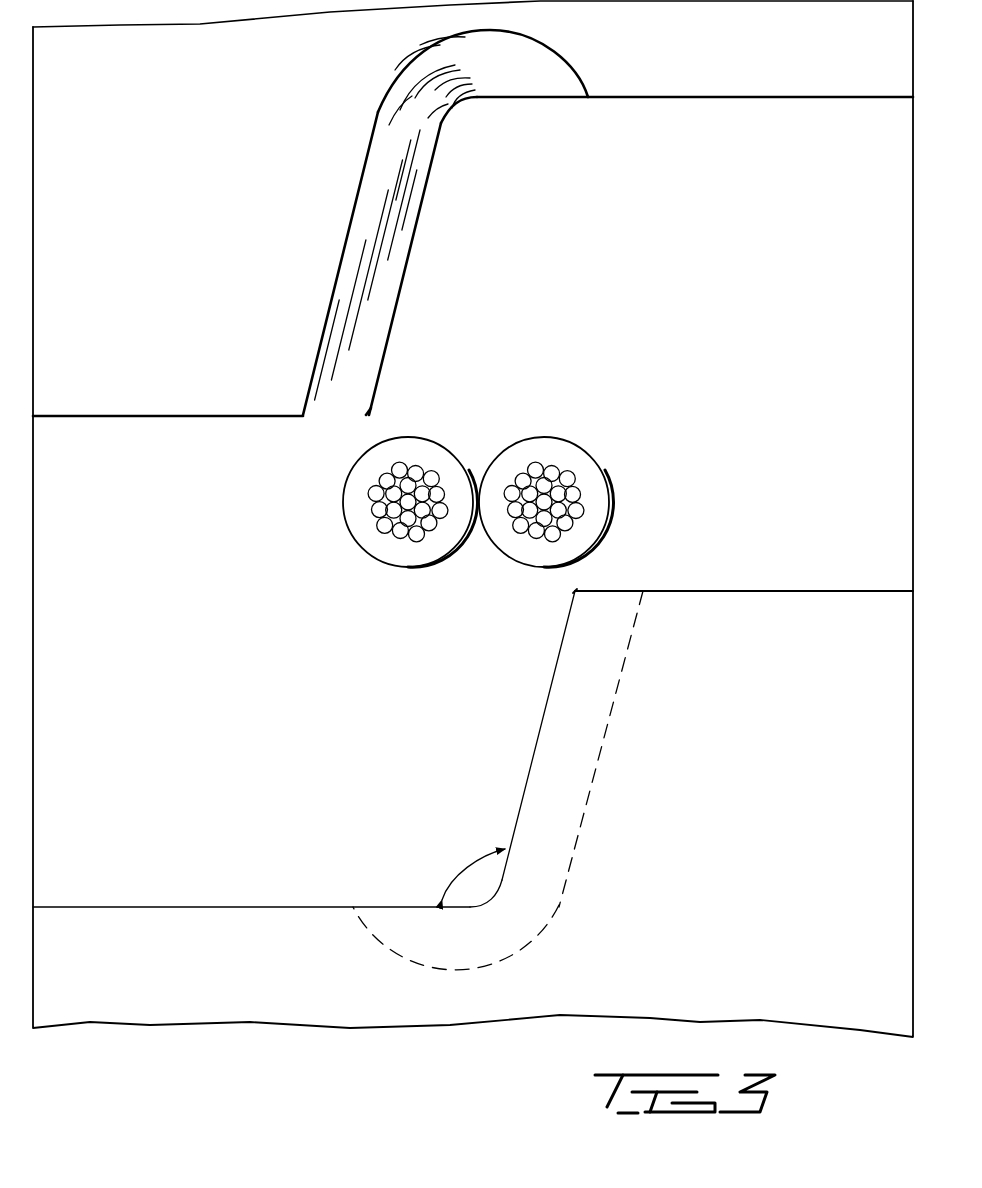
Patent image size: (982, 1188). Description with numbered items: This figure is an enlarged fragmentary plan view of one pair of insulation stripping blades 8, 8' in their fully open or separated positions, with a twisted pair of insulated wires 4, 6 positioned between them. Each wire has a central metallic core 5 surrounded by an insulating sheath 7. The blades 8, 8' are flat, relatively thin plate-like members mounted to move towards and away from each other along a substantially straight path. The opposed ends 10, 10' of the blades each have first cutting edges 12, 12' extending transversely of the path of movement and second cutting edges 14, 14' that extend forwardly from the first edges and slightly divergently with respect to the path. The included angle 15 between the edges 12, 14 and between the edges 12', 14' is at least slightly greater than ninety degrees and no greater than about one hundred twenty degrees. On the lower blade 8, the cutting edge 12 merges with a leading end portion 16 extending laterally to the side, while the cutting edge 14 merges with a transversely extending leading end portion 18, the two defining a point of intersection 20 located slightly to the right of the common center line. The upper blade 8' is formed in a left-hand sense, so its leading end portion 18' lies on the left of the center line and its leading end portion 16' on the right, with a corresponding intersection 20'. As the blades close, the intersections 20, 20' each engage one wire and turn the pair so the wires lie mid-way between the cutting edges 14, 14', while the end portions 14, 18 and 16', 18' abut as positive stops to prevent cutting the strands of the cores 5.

The wire 4 is at (599, 468).
The central metallic core 5 is at (560, 508).
The wire 6 is at (427, 462).
The insulating sheath 7 is at (562, 449).
The insulation stripping blade 8 is at (473, 567).
The insulation stripping blade 8' is at (473, 208).
The opposed end 10 is at (414, 909).
The opposed end 10' is at (390, 261).
The first cutting edge 12 is at (440, 891).
The first cutting edge 12' is at (511, 116).
The second cutting edge 14 is at (541, 735).
The second cutting edge 14' is at (407, 263).
The included angle 15 is at (472, 863).
The leading end portion 16 is at (251, 884).
The leading end portion 16' is at (695, 116).
The leading end portion 18 is at (744, 564).
The leading end portion 18' is at (168, 454).
The point of intersection 20 is at (601, 577).
The point of intersection 20' is at (402, 406).